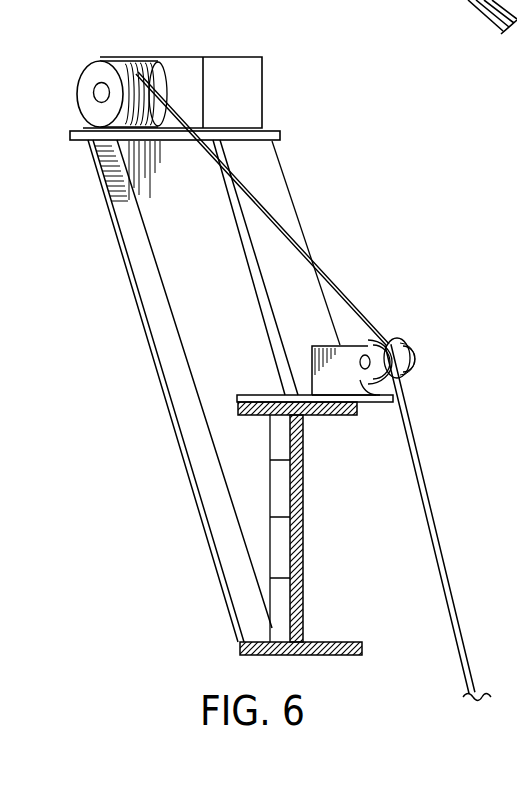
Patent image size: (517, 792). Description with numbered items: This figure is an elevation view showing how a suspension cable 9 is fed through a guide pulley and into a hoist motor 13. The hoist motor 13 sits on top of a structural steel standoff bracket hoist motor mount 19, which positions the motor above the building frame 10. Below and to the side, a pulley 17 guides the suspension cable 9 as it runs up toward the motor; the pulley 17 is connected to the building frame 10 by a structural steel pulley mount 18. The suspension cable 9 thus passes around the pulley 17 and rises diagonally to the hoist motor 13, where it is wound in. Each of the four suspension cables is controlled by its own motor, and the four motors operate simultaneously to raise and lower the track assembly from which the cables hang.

The hoist motor 13 is at (225, 55).
The standoff bracket hoist motor mount 19 is at (132, 288).
The building frame 10 is at (305, 495).
The pulley mount 18 is at (312, 368).
The pulley 17 is at (390, 342).
The suspension cable 9 is at (430, 488).